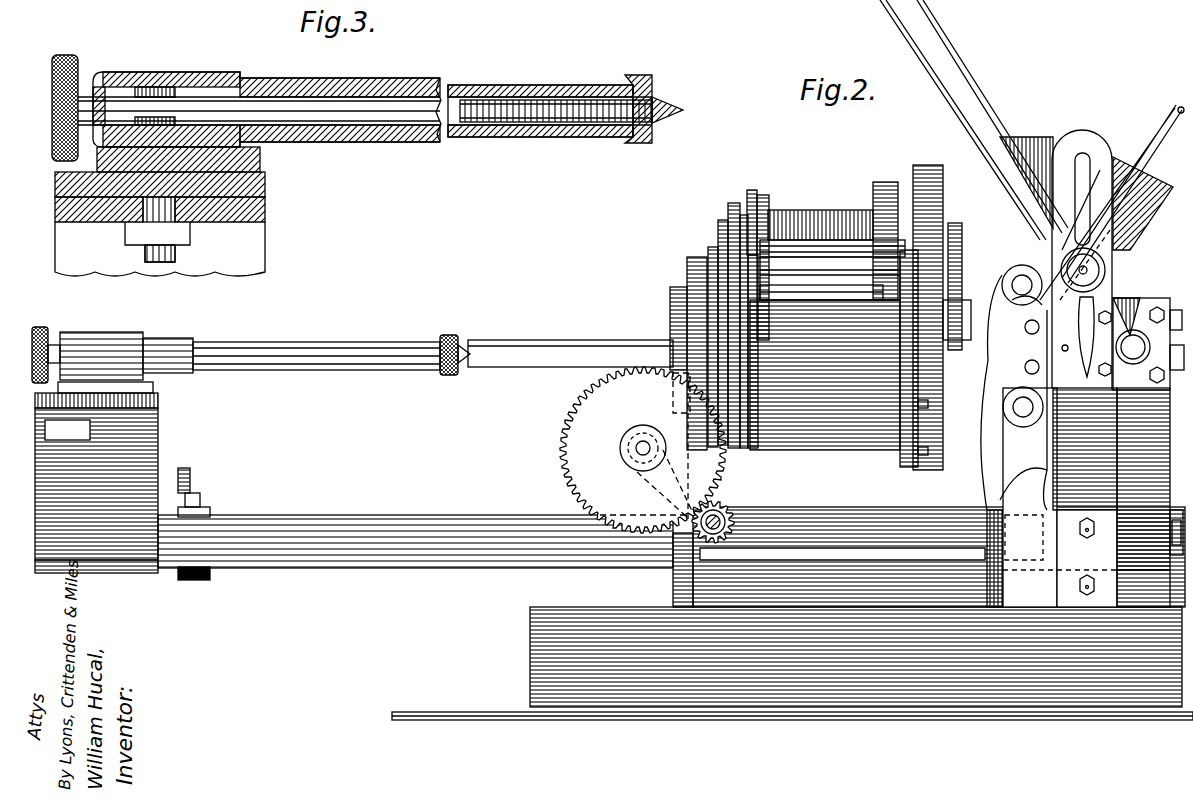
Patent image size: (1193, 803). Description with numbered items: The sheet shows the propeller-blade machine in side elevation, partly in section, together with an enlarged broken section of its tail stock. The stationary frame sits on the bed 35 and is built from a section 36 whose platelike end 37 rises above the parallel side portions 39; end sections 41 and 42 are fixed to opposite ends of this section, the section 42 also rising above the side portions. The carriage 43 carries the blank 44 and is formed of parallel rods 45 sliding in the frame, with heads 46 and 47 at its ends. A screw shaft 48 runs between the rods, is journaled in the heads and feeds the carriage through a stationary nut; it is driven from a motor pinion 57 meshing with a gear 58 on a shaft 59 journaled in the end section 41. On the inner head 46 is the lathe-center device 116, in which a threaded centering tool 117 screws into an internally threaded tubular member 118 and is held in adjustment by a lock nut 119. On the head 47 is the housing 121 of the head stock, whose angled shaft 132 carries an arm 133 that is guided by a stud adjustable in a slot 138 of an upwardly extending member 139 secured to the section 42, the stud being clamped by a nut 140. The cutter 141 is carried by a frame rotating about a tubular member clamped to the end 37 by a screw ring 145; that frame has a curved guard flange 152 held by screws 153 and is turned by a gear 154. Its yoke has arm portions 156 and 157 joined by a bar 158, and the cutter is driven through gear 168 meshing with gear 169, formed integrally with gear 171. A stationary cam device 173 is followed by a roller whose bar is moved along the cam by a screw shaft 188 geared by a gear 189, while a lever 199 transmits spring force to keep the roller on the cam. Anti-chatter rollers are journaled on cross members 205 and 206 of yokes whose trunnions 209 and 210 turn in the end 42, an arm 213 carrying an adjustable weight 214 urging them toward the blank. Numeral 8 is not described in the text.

In FIG. 2, the hole 8 is at (1080, 307).
In FIG. 2, the bed 35 is at (545, 665).
In FIG. 2, the section 36 is at (820, 512).
In FIG. 2, the end 37 is at (690, 262).
In FIG. 2, the side portions 39 is at (939, 557).
In FIG. 2, the end section 41 is at (680, 585).
In FIG. 2, the end section 42 is at (990, 482).
In FIG. 2, the carriage 43 is at (148, 479).
In FIG. 2, the blank 44 is at (578, 341).
In FIG. 2, the rods 45 is at (356, 515).
In FIG. 3, the head 46 is at (265, 208).
In FIG. 2, the head 46 is at (152, 441).
In FIG. 2, the head 47 is at (1137, 461).
In FIG. 2, the screw shaft 48 is at (1177, 560).
In FIG. 2, the pinion 57 is at (722, 512).
In FIG. 2, the gear 58 is at (573, 461).
In FIG. 2, the shaft 59 is at (640, 447).
In FIG. 3, the lathe-center device 116 is at (403, 138).
In FIG. 3, the threaded centering tool 117 is at (500, 119).
In FIG. 3, the tubular member 118 is at (523, 137).
In FIG. 2, the tubular member 118 is at (366, 334).
In FIG. 3, the lock nut 119 is at (640, 75).
In FIG. 2, the lock nut 119 is at (452, 335).
In FIG. 2, the housing 121 is at (1138, 302).
In FIG. 2, the shaft 132 is at (1078, 497).
In FIG. 2, the arm 133 is at (950, 54).
In FIG. 2, the slot 138 is at (1083, 155).
In FIG. 2, the upwardly extending member 139 is at (1068, 143).
In FIG. 2, the nut 140 is at (1105, 270).
In FIG. 2, the cutter 141 is at (958, 224).
In FIG. 2, the screw ring 145 is at (676, 305).
In FIG. 2, the curved guard flange 152 is at (866, 440).
In FIG. 2, the screws 153 is at (946, 445).
In FIG. 2, the gear 154 is at (712, 272).
In FIG. 2, the arm portion 156 is at (926, 175).
In FIG. 2, the arm portion 157 is at (742, 215).
In FIG. 2, the bar 158 is at (806, 222).
In FIG. 2, the gear 168 is at (731, 203).
In FIG. 2, the gear 169 is at (730, 291).
In FIG. 2, the gear 171 is at (723, 253).
In FIG. 2, the cam device 173 is at (815, 293).
In FIG. 2, the screw shaft 188 is at (771, 215).
In FIG. 2, the gear 189 is at (756, 193).
In FIG. 2, the lever 199 is at (878, 182).
In FIG. 2, the cross member 205 is at (1022, 285).
In FIG. 2, the cross member 206 is at (1023, 418).
In FIG. 2, the trunnions 209 is at (1030, 332).
In FIG. 2, the trunnions 210 is at (1028, 366).
In FIG. 2, the arm 213 is at (1170, 113).
In FIG. 2, the weight 214 is at (1128, 160).